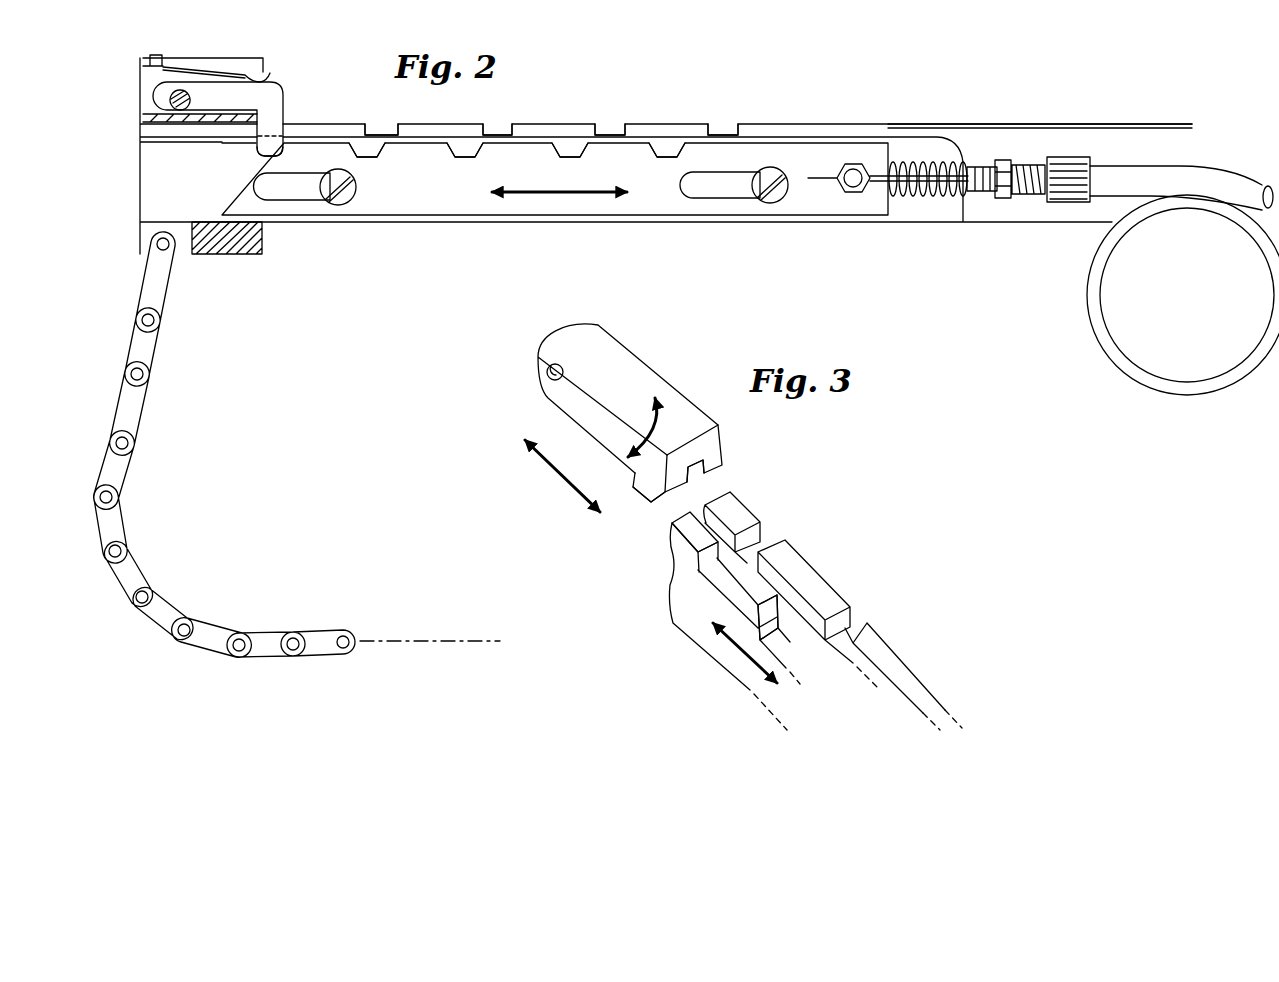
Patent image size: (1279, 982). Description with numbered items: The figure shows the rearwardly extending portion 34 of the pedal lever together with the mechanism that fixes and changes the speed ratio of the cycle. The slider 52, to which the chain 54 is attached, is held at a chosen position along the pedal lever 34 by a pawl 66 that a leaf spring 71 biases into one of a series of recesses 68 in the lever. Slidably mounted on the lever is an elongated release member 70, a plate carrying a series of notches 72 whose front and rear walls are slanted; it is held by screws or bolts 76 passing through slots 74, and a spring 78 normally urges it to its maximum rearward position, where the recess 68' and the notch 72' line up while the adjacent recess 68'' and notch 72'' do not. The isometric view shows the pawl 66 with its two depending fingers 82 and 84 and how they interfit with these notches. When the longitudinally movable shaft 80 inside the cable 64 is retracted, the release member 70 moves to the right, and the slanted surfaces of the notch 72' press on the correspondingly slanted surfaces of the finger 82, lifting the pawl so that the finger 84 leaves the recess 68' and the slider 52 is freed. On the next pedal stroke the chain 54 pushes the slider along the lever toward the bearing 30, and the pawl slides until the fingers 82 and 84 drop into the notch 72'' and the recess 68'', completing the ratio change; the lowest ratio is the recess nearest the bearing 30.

In FIG. 2, the bearing 30 is at (1198, 300).
In FIG. 2, the rearwardly extending portion of the pedal lever 34 is at (1003, 137).
In FIG. 3, the rearwardly extending portion of the pedal lever 34 is at (898, 658).
In FIG. 2, the slider 52 is at (228, 254).
In FIG. 2, the chain 54 is at (160, 342).
In FIG. 2, the cable 64 is at (1153, 170).
In FIG. 2, the pawl 66 is at (282, 90).
In FIG. 3, the pawl 66 is at (568, 340).
In FIG. 2, the recesses 68 is at (511, 109).
In FIG. 3, the recess 68' is at (769, 527).
In FIG. 3, the recess 68'' is at (848, 613).
In FIG. 2, the release member 70 is at (598, 207).
In FIG. 3, the release member 70 is at (690, 627).
In FIG. 2, the leaf spring 71 is at (230, 67).
In FIG. 2, the notches 72 is at (485, 167).
In FIG. 3, the notch 72' is at (661, 563).
In FIG. 3, the notch 72'' is at (789, 660).
In FIG. 2, the slots 74 is at (283, 195).
In FIG. 2, the screws or bolts 76 is at (347, 203).
In FIG. 2, the spring 78 is at (935, 200).
In FIG. 2, the longitudinally movable shaft 80 is at (880, 182).
In FIG. 2, the finger 82 is at (267, 152).
In FIG. 3, the finger 82 is at (648, 490).
In FIG. 3, the finger 84 is at (713, 472).